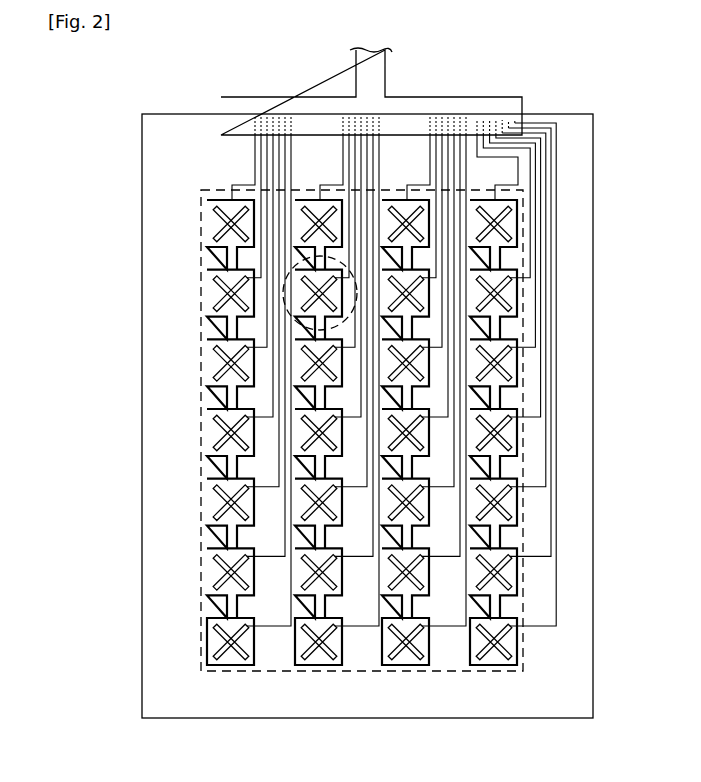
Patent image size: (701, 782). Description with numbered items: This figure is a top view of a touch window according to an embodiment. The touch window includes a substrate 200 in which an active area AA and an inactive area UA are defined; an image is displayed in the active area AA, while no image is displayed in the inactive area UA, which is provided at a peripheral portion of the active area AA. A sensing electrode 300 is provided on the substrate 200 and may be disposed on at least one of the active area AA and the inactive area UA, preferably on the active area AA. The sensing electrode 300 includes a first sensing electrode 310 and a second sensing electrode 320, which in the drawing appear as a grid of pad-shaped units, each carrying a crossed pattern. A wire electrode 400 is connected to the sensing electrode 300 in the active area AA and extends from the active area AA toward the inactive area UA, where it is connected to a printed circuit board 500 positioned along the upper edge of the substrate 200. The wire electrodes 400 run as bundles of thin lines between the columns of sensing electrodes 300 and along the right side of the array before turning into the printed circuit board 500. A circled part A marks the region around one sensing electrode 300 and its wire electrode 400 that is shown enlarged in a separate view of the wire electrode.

The substrate 200 is at (594, 433).
The printed circuit board 500 is at (385, 73).
The sensing electrode 300 is at (153, 234).
The first sensing electrode 310 is at (213, 230).
The second sensing electrode 320 is at (243, 212).
The wire electrode 400 is at (277, 389).
The part A is at (343, 262).
The active area AA is at (445, 538).
The inactive area UA is at (418, 720).